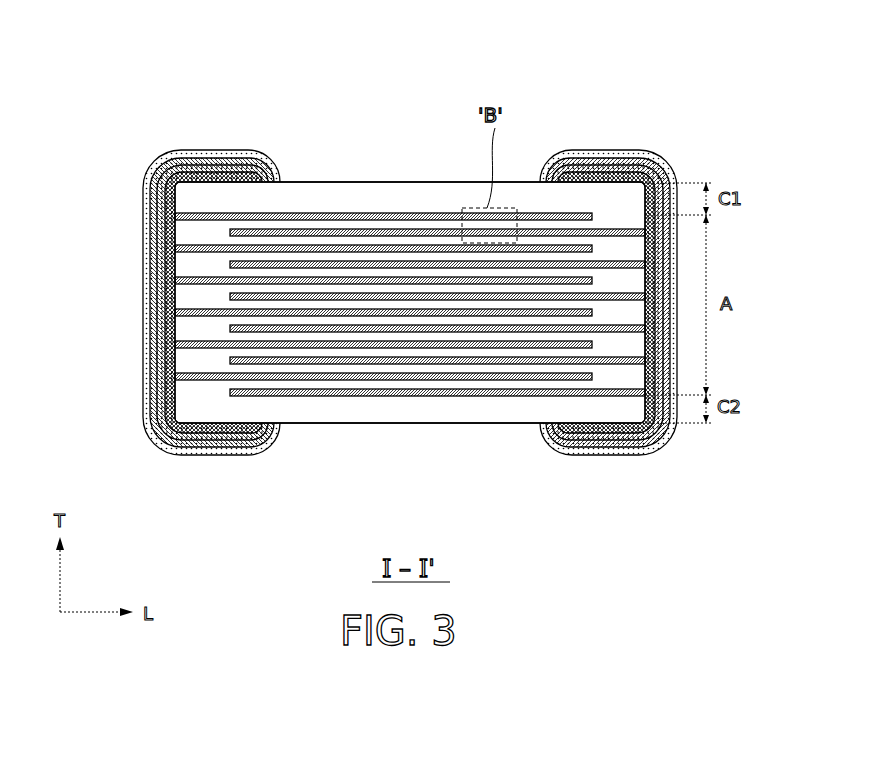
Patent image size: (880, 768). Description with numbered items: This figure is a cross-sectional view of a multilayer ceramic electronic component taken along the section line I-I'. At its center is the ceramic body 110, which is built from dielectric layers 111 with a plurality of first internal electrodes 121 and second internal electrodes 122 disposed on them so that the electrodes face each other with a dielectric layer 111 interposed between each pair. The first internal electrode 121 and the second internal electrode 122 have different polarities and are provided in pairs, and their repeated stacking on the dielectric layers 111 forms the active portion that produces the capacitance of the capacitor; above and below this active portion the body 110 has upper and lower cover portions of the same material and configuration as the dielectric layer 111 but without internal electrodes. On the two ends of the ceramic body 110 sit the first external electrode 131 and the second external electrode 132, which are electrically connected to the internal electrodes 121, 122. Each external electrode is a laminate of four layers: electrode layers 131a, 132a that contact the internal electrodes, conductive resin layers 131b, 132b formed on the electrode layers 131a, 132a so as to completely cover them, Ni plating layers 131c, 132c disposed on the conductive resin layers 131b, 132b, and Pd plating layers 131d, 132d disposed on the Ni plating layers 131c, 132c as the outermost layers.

The ceramic body 110 is at (385, 182).
The dielectric layer 111 is at (190, 238).
The first internal electrode 121 is at (297, 213).
The second internal electrode 122 is at (234, 233).
The first external electrode 131 is at (270, 58).
The electrode layer 131a is at (245, 177).
The conductive resin layer 131b is at (210, 165).
The Ni plating layer 131c is at (168, 158).
The Pd plating layer 131d is at (147, 173).
The second external electrode 132 is at (745, 58).
The electrode layer 132a is at (570, 176).
The conductive resin layer 132b is at (600, 167).
The Ni plating layer 132c is at (632, 160).
The Pd plating layer 132d is at (672, 153).